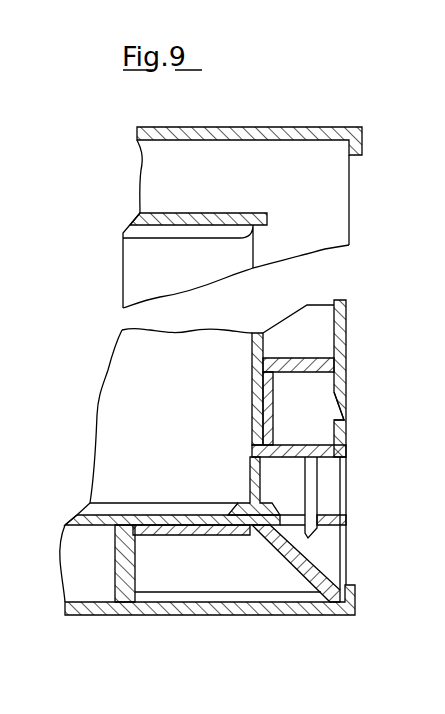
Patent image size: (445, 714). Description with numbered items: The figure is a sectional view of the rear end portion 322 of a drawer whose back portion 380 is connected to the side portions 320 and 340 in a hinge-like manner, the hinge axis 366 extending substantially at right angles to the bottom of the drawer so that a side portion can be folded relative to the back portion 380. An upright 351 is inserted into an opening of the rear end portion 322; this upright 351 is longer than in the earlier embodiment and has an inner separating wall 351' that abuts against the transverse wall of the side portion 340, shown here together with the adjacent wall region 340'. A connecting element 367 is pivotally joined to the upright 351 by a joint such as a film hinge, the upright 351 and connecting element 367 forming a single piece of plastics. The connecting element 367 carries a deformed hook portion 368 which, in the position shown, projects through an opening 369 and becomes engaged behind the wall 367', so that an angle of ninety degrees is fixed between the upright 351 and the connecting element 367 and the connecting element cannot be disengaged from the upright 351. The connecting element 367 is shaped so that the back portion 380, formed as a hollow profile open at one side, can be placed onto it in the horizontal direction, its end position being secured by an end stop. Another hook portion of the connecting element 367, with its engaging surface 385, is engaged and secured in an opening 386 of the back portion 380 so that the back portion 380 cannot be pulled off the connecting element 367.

The side portion 320 is at (175, 180).
The rear end portion 322 is at (188, 612).
The side portion 340 is at (187, 620).
The side wall 340' is at (71, 563).
The upright 351 is at (330, 563).
The inner separating wall 351' is at (148, 563).
The hinge axis 366 is at (250, 487).
The connecting element 367 is at (330, 453).
The wall 367' is at (365, 529).
The hook portion 368 is at (317, 483).
The opening 369 is at (293, 517).
The back portion 380 is at (347, 312).
The latching nose 385 is at (333, 414).
The opening 386 is at (340, 398).